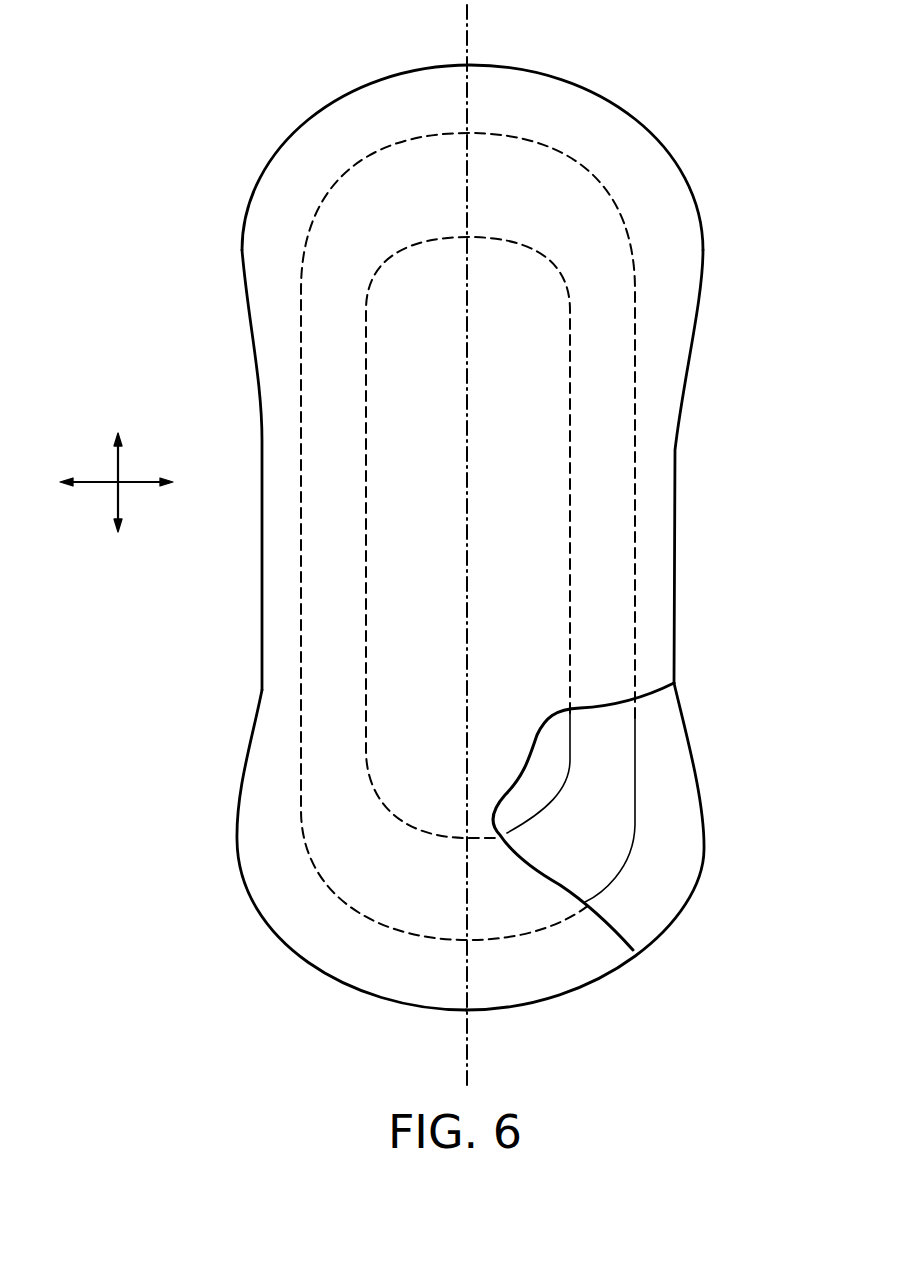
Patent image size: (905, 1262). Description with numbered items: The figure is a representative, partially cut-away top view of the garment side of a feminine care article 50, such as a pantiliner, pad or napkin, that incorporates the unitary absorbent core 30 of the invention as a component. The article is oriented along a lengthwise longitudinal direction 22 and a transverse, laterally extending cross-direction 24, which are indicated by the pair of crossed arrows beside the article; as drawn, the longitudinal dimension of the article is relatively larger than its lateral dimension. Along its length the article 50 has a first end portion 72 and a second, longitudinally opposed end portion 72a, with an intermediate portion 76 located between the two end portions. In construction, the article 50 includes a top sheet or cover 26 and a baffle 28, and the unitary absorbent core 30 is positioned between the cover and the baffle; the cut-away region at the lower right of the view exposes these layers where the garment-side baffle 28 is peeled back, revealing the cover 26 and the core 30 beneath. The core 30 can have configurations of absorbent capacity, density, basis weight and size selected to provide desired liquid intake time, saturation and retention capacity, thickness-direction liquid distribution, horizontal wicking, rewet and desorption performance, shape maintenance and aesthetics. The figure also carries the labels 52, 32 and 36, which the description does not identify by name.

The feminine care article 50 is at (494, 516).
The longitudinal centerline 52 is at (462, 22).
The first end portion 72 is at (267, 193).
The second end portion 72a is at (337, 957).
The intermediate portion 76 is at (277, 581).
The cover 26 is at (658, 509).
The baffle 28 is at (677, 786).
The unitary absorbent core 30 is at (635, 718).
The inner boundary of folded flap 32 is at (532, 788).
The folded flap portion 36 is at (570, 868).
The longitudinal direction 22 is at (113, 460).
The cross-direction 24 is at (138, 484).